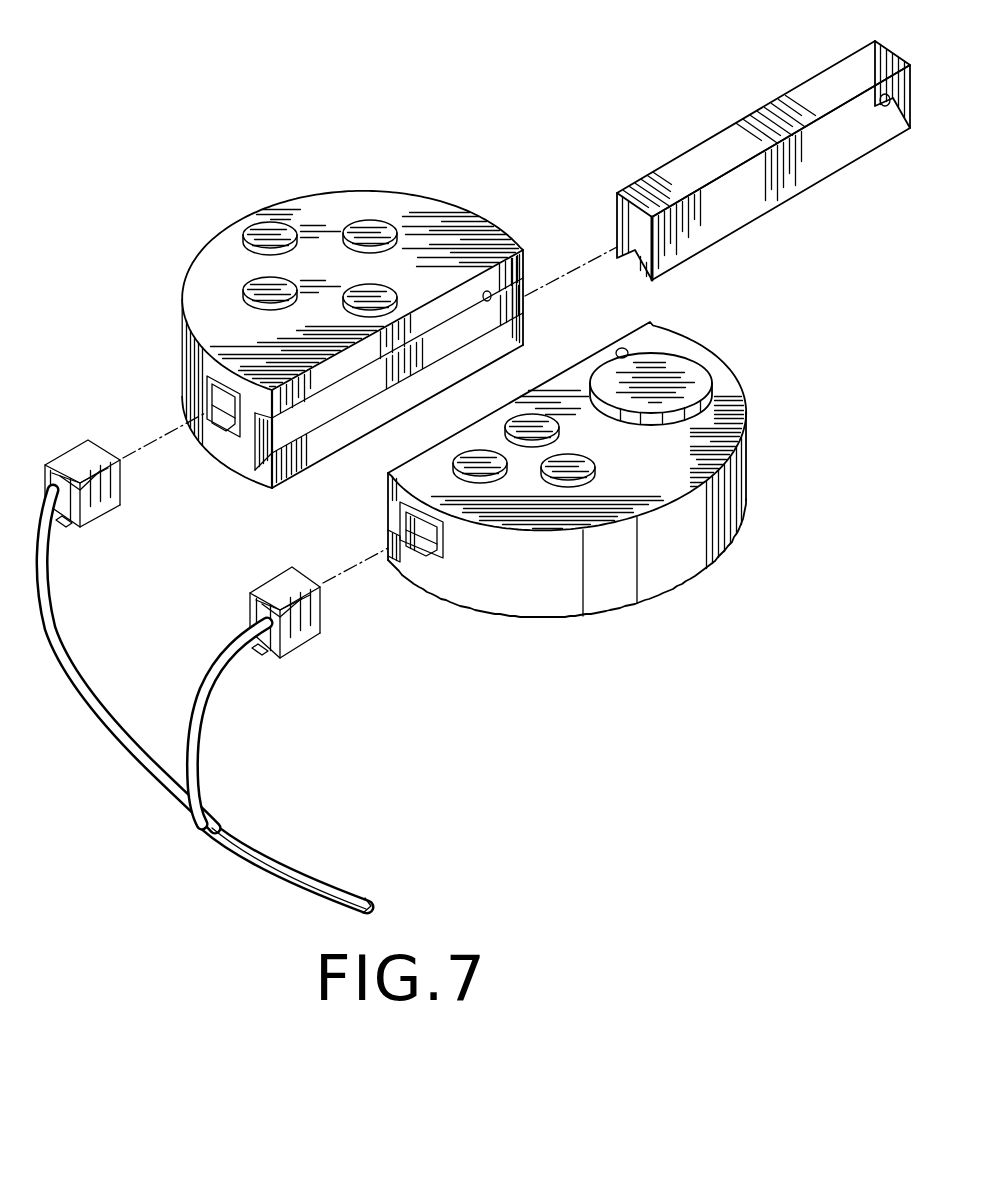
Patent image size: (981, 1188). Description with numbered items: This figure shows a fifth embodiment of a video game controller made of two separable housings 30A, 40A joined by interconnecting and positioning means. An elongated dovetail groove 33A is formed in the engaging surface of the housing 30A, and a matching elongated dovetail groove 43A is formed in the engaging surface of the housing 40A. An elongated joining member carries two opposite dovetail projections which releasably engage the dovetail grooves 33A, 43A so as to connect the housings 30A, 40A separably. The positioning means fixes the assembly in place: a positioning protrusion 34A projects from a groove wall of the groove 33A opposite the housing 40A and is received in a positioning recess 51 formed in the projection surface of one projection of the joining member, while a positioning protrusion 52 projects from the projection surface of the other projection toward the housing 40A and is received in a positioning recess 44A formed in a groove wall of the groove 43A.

The housing 30A is at (190, 354).
The dovetail groove 33A is at (306, 420).
The positioning protrusion 34A is at (494, 299).
The housing 40A is at (742, 490).
The dovetail groove 43A is at (420, 560).
The positioning recess 44A is at (630, 349).
The positioning recess 51 is at (848, 80).
The positioning protrusion 52 is at (885, 107).